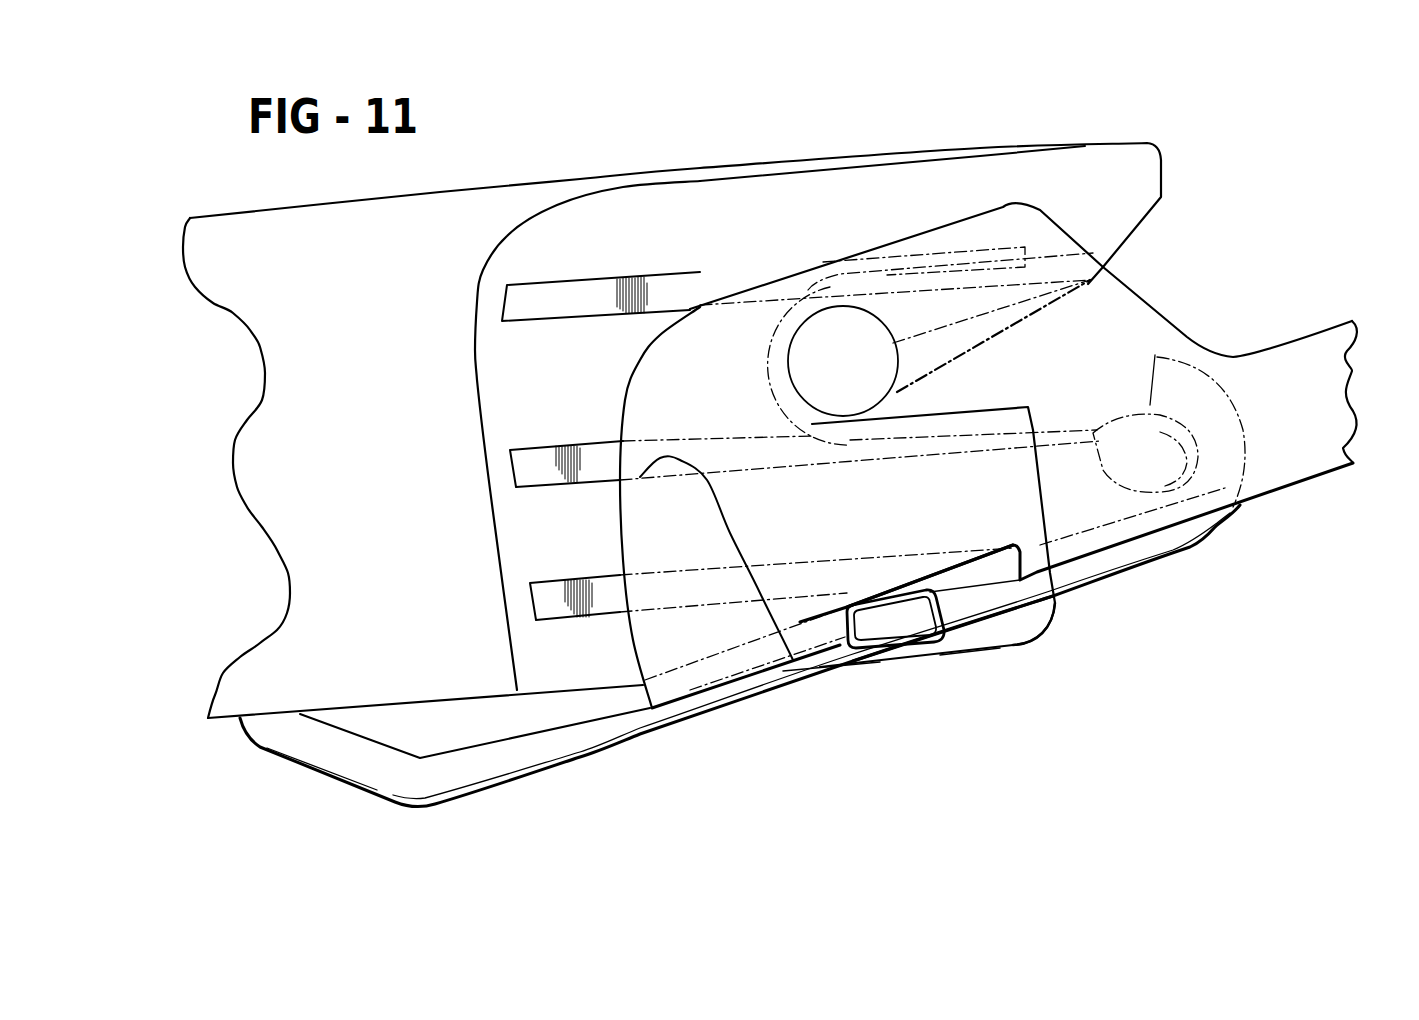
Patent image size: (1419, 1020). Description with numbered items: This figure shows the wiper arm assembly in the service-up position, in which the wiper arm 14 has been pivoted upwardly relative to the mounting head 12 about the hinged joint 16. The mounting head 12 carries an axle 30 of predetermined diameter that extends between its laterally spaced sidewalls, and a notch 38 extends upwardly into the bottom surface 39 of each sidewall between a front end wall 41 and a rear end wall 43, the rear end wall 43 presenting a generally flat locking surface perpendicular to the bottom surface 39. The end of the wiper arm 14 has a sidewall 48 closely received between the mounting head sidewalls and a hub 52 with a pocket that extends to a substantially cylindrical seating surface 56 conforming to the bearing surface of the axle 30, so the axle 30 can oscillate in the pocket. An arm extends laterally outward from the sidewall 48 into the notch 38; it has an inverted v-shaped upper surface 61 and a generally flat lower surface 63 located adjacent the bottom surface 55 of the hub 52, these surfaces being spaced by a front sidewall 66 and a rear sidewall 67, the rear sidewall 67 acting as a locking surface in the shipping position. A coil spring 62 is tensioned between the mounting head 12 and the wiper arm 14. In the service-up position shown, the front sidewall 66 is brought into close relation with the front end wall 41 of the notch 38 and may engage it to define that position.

The mounting head 12 is at (1300, 488).
The wiper arm 14 is at (550, 178).
The hinged joint 16 is at (836, 148).
The axle 30 is at (1108, 270).
The notch 38 is at (950, 615).
The bottom surface 39 is at (820, 657).
The front end wall 41 is at (857, 632).
The rear end wall 43 is at (1020, 647).
The sidewall 48 is at (297, 537).
The hub 52 is at (1160, 243).
The bottom surface 55 is at (977, 652).
The seating surface 56 is at (810, 313).
The upper surface 61 is at (910, 583).
The coil spring 62 is at (365, 792).
The lower surface 63 is at (890, 655).
The front sidewall 66 is at (837, 617).
The rear sidewall 67 is at (967, 628).